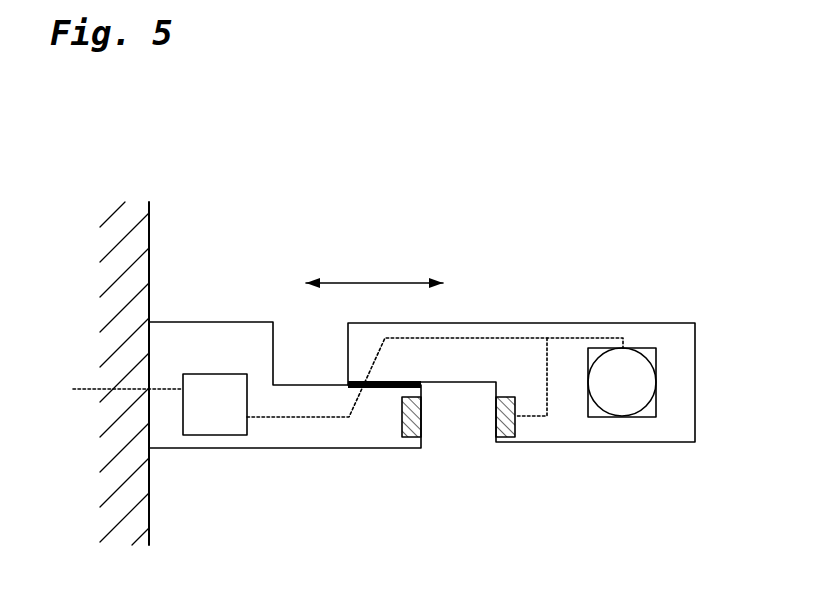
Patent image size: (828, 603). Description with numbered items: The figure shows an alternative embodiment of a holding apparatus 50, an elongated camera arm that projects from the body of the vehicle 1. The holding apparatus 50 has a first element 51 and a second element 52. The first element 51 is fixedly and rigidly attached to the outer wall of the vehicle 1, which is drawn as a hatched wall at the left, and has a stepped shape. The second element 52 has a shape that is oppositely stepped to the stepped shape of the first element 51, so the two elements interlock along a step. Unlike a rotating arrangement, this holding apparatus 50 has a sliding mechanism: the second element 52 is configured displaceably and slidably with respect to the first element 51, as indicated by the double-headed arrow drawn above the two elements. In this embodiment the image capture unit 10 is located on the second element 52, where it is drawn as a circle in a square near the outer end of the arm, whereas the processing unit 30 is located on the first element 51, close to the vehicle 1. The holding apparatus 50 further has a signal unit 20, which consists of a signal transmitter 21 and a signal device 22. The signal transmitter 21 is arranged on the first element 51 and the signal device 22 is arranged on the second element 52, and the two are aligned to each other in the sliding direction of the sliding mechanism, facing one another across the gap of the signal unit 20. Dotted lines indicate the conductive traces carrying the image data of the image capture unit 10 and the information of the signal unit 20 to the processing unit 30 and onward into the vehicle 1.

The vehicle 1 is at (110, 271).
The holding apparatus 50 is at (497, 210).
The image capture unit 10 is at (629, 385).
The signal unit 20 is at (456, 436).
The signal transmitter 21 is at (407, 437).
The signal device 22 is at (503, 427).
The processing unit 30 is at (227, 415).
The first element 51 is at (273, 442).
The second element 52 is at (565, 429).